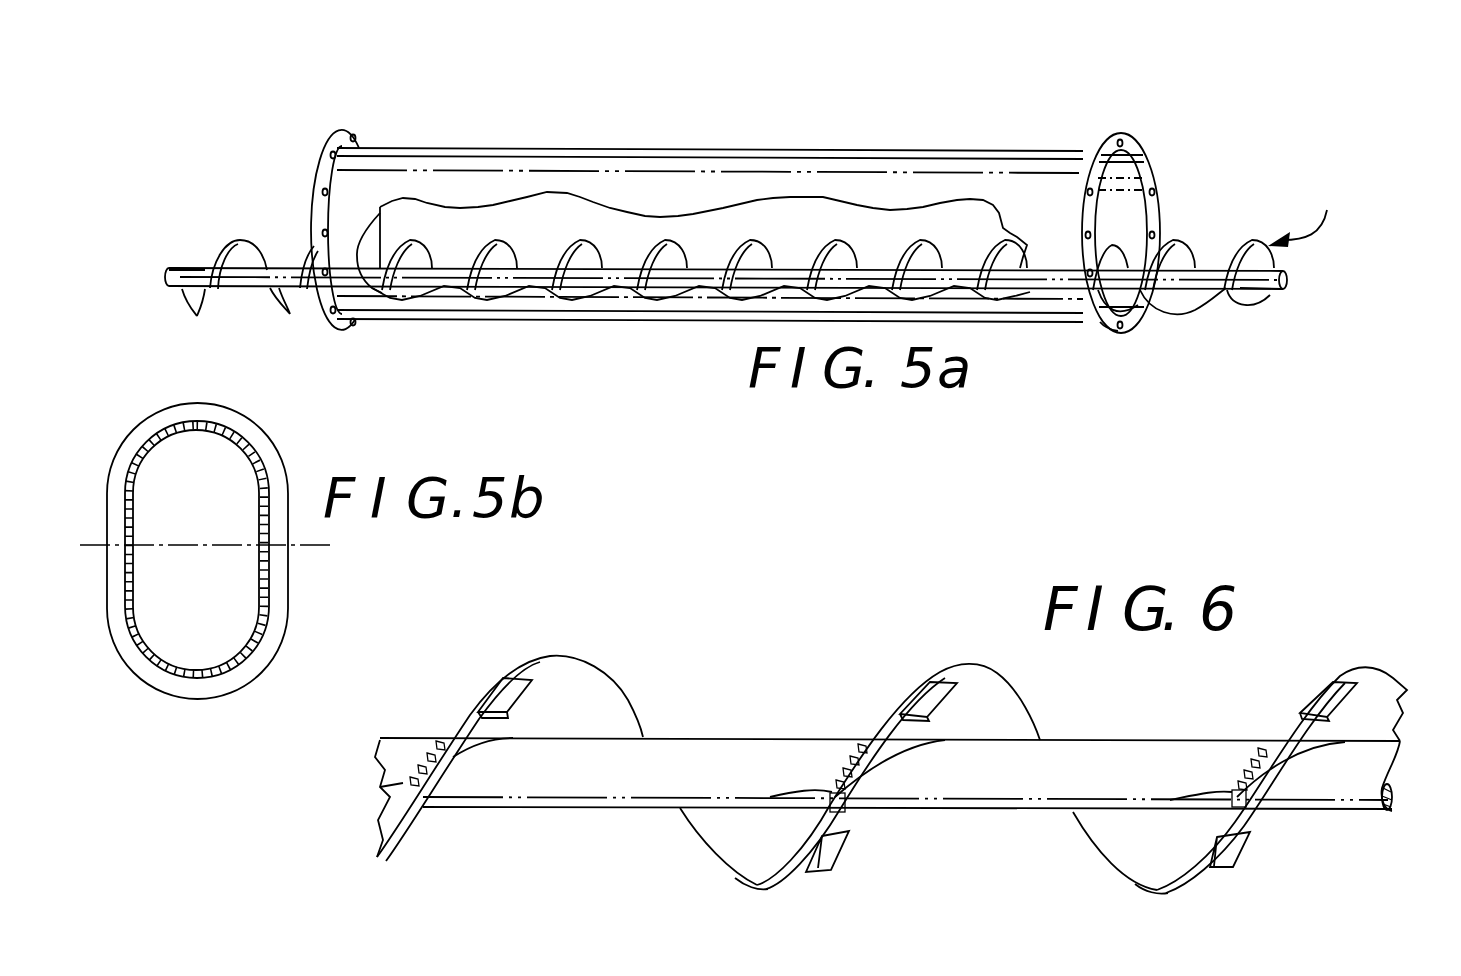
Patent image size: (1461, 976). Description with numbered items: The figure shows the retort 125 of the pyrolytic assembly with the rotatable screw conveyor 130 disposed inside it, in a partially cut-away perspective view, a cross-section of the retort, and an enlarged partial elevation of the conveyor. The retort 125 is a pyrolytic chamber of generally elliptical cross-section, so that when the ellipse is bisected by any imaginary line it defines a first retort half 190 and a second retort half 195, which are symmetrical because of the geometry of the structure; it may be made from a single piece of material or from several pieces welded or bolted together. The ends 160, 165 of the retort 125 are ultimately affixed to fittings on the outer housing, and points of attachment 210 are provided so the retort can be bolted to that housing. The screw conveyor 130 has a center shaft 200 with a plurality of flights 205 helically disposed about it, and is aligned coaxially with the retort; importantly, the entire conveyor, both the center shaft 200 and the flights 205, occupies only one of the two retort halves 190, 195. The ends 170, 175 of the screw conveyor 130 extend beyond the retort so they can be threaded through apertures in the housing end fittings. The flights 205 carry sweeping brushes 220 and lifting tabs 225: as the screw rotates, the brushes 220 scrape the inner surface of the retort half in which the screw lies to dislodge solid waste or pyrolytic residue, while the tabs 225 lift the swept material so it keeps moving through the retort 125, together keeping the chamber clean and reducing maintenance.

In FIG. 5a, the retort 125 is at (548, 148).
In FIG. 5a, the screw conveyor 130 is at (1309, 214).
In FIG. 5a, the end of the retort 160 is at (1133, 147).
In FIG. 5a, the end of the retort 165 is at (313, 178).
In FIG. 5a, the end of the screw conveyor 170 is at (1253, 290).
In FIG. 5a, the end of the screw conveyor 175 is at (203, 264).
In FIG. 5a, the first retort half 190 is at (877, 185).
In FIG. 5b, the first retort half 190 is at (213, 505).
In FIG. 5a, the second retort half 195 is at (533, 295).
In FIG. 5b, the second retort half 195 is at (213, 618).
In FIG. 5a, the center shaft 200 is at (1287, 280).
In FIG. 6, the center shaft 200 is at (1355, 777).
In FIG. 5a, the flights 205 is at (1173, 257).
In FIG. 6, the flights 205 is at (623, 695).
In FIG. 5a, the points of attachment 210 is at (1102, 330).
In FIG. 6, the sweeping brushes 220 is at (414, 765).
In FIG. 6, the lifting tabs 225 is at (500, 695).